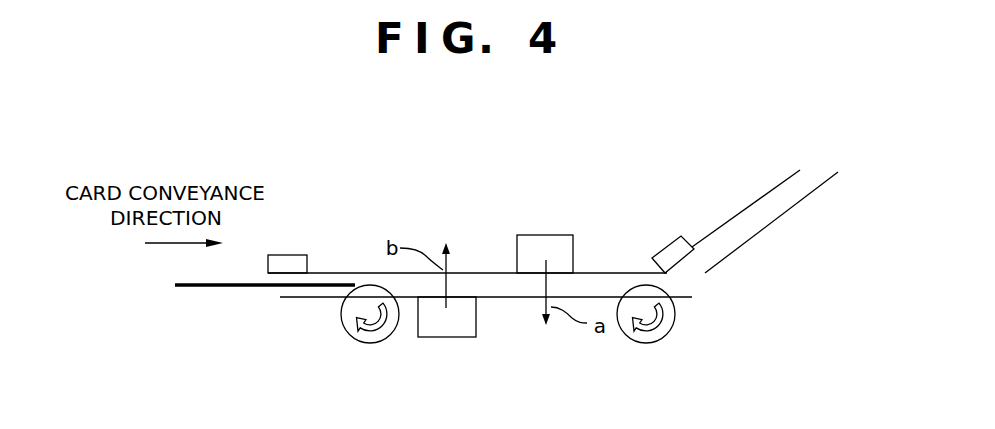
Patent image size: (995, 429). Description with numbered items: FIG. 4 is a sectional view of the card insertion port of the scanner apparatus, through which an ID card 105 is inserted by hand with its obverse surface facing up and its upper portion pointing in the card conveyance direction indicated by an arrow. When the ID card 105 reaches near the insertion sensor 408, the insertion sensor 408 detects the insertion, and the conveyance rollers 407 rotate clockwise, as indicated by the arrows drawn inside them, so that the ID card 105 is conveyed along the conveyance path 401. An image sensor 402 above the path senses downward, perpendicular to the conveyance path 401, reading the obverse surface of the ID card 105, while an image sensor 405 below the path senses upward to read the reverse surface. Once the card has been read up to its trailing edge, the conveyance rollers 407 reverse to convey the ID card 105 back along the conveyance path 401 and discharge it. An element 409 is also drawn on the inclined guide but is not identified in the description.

The ID card 105 is at (203, 288).
The conveyance path 401 is at (303, 300).
The image sensor 402 is at (527, 235).
The image sensor 405 is at (468, 337).
The conveyance rollers 407 is at (373, 345).
The insertion sensor 408 is at (297, 255).
The inclined guide sensor 409 is at (674, 238).